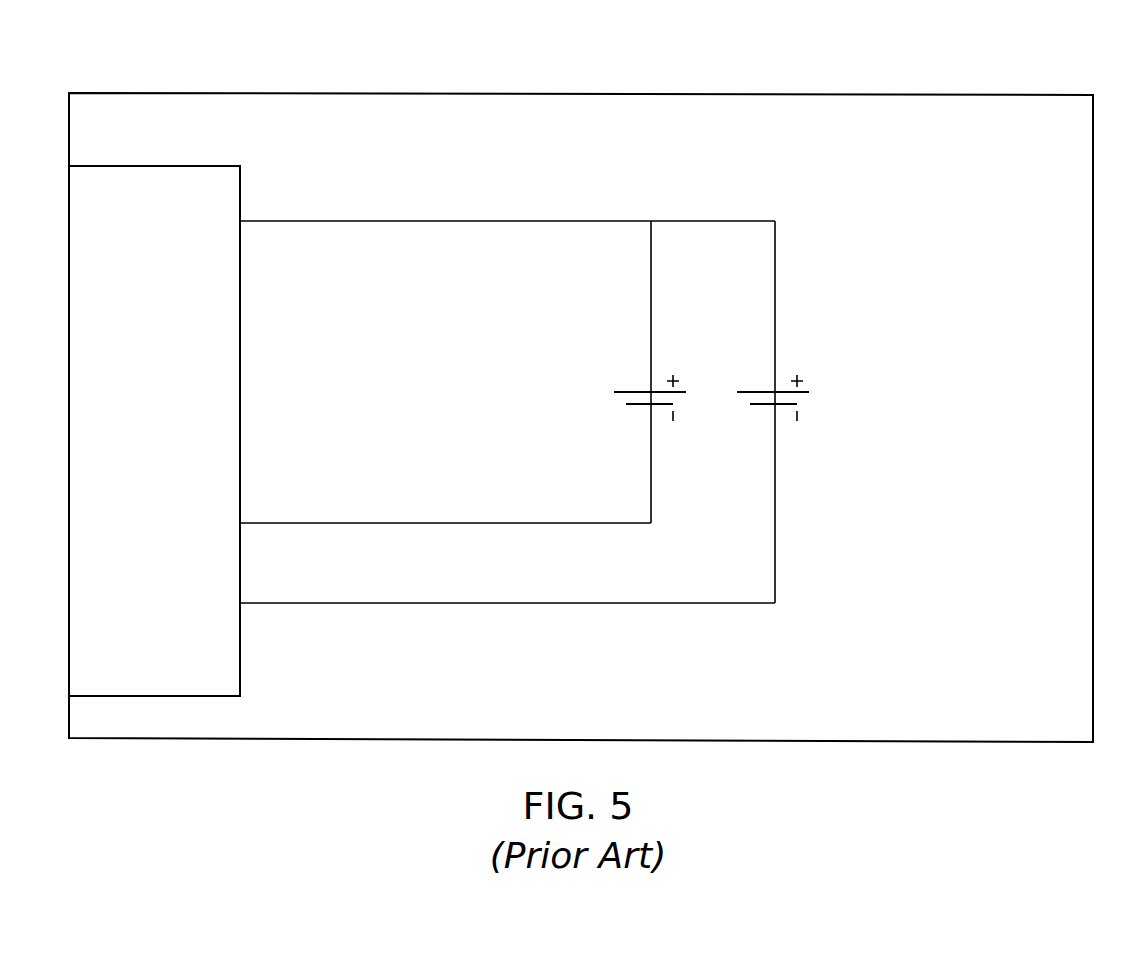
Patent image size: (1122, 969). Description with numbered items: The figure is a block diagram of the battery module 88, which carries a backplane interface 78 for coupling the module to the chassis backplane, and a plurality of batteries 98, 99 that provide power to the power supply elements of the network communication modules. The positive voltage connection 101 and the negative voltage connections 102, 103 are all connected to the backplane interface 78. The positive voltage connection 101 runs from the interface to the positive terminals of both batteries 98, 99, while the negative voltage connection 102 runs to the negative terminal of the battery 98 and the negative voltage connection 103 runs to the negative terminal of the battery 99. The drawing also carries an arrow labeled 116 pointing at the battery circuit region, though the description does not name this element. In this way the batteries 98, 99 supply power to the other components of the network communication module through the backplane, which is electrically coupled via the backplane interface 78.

The battery module 88 is at (737, 78).
The backplane interface 78 is at (117, 166).
The positive voltage connection 101 is at (452, 221).
The negative voltage connection 102 is at (347, 523).
The negative voltage connection 103 is at (353, 603).
The battery cells circuit 116 is at (721, 373).
The battery 98 is at (651, 357).
The battery 99 is at (774, 357).